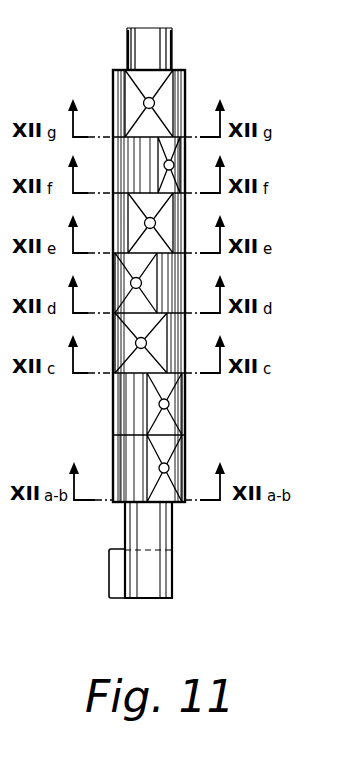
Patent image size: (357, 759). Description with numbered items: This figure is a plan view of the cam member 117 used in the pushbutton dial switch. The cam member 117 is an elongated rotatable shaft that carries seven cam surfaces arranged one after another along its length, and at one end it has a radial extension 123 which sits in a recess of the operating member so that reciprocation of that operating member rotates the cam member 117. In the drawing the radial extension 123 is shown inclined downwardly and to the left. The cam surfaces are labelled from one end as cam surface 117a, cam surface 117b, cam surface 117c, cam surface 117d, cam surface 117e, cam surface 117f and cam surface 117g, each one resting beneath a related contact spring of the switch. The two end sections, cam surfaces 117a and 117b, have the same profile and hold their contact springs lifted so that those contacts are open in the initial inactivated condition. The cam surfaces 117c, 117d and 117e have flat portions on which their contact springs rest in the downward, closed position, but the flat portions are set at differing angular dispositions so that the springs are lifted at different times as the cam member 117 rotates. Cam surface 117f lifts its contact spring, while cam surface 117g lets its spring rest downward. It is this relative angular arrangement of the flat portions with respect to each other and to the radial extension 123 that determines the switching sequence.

The cam member 117 is at (172, 550).
The cam surface 117a is at (176, 453).
The cam surface 117b is at (176, 414).
The cam surface 117c is at (172, 333).
The cam surface 117d is at (170, 272).
The cam surface 117e is at (168, 220).
The cam surface 117f is at (176, 158).
The cam surface 117g is at (168, 97).
The radial extension 123 is at (117, 585).